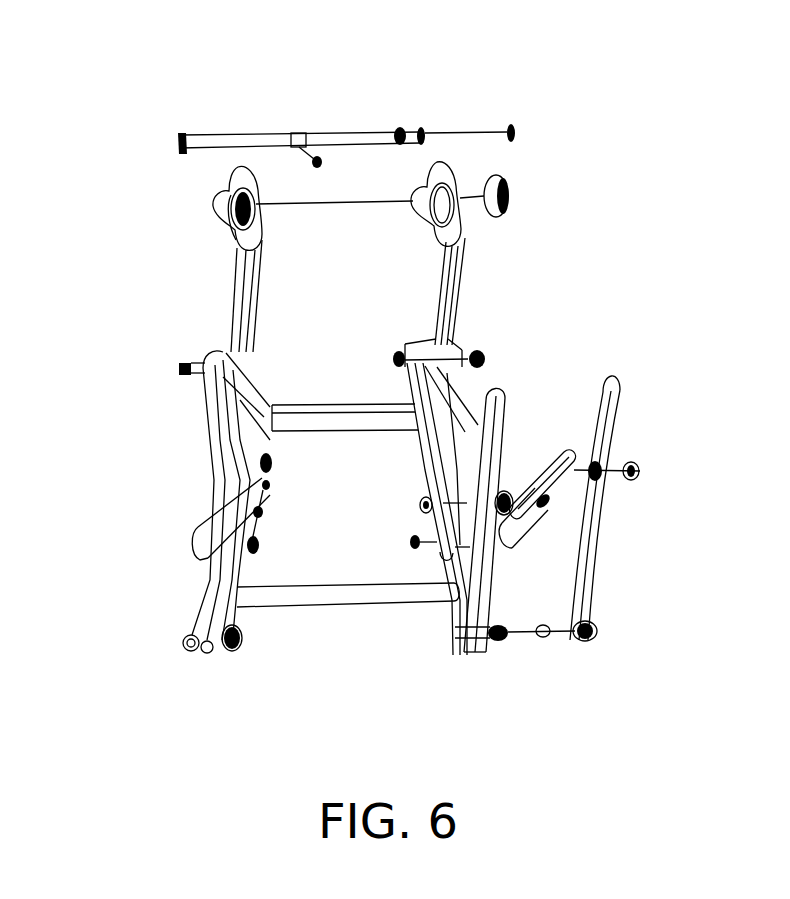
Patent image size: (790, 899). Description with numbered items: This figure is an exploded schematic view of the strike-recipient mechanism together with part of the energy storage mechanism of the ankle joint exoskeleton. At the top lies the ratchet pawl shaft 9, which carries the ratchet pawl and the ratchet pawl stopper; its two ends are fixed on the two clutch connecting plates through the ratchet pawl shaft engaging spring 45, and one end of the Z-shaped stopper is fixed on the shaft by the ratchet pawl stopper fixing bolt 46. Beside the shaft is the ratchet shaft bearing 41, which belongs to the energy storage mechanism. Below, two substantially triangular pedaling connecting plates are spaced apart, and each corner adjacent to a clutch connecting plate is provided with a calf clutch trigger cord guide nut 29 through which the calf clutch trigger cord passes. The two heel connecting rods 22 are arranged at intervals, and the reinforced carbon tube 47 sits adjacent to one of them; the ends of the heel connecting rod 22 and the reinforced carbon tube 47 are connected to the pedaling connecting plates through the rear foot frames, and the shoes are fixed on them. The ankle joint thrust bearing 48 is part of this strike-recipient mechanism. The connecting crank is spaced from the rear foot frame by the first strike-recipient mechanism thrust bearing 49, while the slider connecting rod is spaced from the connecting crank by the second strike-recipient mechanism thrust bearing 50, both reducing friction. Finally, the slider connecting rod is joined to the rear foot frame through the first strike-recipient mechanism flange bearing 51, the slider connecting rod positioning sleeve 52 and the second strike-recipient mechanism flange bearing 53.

The ratchet pawl shaft 9 is at (363, 131).
The heel connecting rod 22 is at (298, 431).
The calf clutch trigger cord guide nut 29 is at (179, 370).
The ratchet shaft bearing 41 is at (512, 183).
The ratchet pawl shaft engaging spring 45 is at (178, 140).
The ratchet pawl stopper fixing bolt 46 is at (310, 158).
The reinforced carbon tube 47 is at (338, 405).
The ankle joint thrust bearing 48 is at (486, 354).
The first strike-recipient mechanism thrust bearing 49 is at (511, 490).
The second strike-recipient mechanism thrust bearing 50 is at (600, 463).
The first strike-recipient mechanism flange bearing 51 is at (506, 627).
The slider connecting rod positioning sleeve 52 is at (594, 638).
The second strike-recipient mechanism flange bearing 53 is at (497, 643).